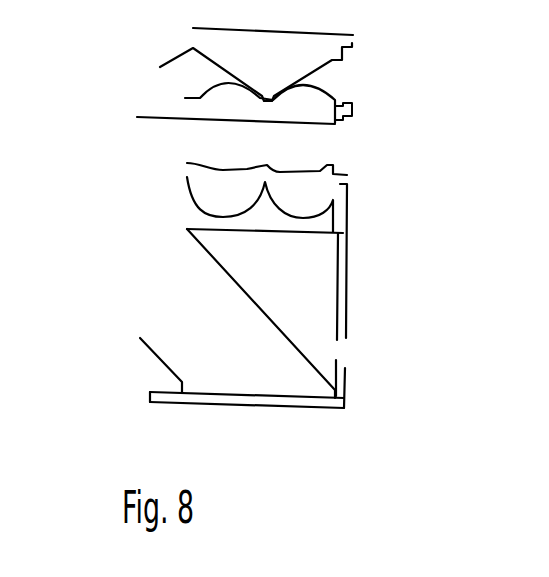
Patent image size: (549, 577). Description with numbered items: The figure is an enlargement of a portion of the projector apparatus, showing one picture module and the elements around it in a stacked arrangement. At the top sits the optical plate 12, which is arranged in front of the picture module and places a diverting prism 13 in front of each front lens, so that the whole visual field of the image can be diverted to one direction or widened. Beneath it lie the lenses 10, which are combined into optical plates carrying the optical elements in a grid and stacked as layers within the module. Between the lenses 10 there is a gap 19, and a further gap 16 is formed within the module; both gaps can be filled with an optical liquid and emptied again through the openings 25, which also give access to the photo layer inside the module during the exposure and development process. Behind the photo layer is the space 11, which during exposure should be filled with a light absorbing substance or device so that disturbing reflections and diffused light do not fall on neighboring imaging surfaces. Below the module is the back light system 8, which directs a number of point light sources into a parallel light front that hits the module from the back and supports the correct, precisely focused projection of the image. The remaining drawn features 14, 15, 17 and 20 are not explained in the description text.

The back light system 8 is at (280, 282).
The lenses 10 is at (298, 112).
The space 11 is at (320, 225).
The optical plate 12 is at (323, 40).
The diverting prism 13 is at (283, 60).
The top plate 14 is at (213, 35).
The arched member 15 is at (205, 87).
The gap 16 is at (213, 75).
The wave member 17 is at (238, 170).
The gap 19 is at (222, 138).
The U-shaped member 20 is at (215, 208).
The openings 25 is at (350, 77).